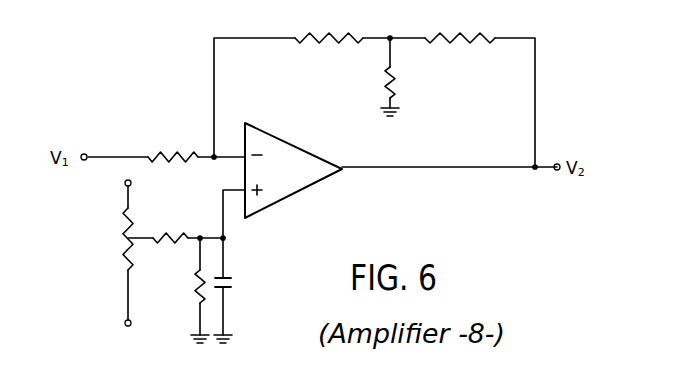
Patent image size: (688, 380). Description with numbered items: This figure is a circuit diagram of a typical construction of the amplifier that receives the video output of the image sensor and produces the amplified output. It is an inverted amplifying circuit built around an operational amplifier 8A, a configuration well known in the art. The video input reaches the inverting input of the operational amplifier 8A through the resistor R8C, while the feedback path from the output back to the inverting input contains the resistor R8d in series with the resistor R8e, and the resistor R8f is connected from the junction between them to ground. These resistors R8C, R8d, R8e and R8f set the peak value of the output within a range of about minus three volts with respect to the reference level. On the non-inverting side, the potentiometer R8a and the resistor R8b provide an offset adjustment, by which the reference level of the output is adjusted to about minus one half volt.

The operational amplifier 8A is at (305, 144).
The resistor R8C is at (165, 150).
The resistor R8d is at (319, 44).
The resistor R8e is at (459, 44).
The resistor R8f is at (396, 94).
The potentiometer R8a is at (126, 228).
The resistor R8b is at (168, 232).